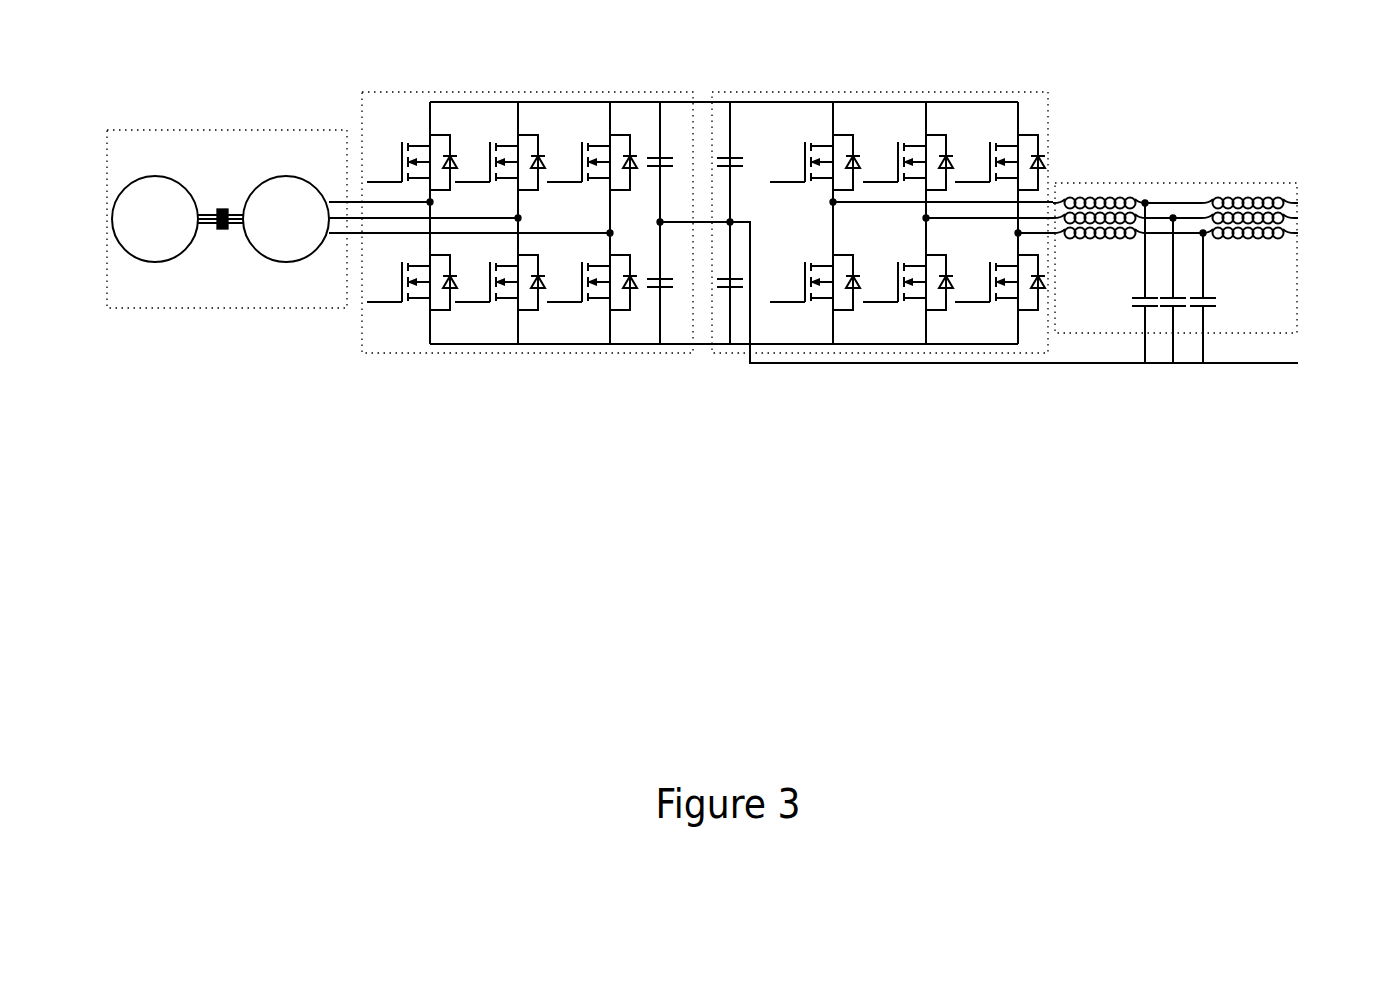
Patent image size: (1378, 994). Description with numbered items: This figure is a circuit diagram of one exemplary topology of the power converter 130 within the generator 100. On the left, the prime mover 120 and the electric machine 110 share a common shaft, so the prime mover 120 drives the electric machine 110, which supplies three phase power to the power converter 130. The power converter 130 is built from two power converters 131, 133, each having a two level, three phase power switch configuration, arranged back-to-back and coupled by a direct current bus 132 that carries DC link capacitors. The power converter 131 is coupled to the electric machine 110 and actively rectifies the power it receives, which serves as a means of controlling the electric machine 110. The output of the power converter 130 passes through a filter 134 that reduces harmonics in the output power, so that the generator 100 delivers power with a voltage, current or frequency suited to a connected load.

The generator 100 is at (702, 343).
The electric machine 110 is at (287, 263).
The prime mover 120 is at (152, 262).
The power converter 130 is at (838, 307).
The power converter 131 is at (525, 363).
The direct current (DC) bus 132 is at (713, 355).
The power converter 133 is at (1003, 375).
The filter 134 is at (1200, 380).